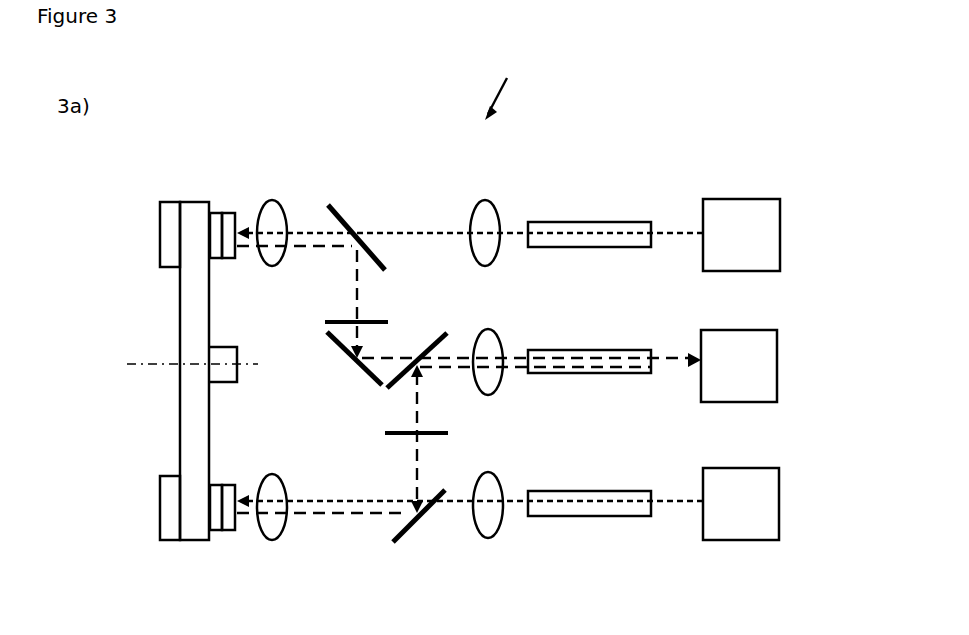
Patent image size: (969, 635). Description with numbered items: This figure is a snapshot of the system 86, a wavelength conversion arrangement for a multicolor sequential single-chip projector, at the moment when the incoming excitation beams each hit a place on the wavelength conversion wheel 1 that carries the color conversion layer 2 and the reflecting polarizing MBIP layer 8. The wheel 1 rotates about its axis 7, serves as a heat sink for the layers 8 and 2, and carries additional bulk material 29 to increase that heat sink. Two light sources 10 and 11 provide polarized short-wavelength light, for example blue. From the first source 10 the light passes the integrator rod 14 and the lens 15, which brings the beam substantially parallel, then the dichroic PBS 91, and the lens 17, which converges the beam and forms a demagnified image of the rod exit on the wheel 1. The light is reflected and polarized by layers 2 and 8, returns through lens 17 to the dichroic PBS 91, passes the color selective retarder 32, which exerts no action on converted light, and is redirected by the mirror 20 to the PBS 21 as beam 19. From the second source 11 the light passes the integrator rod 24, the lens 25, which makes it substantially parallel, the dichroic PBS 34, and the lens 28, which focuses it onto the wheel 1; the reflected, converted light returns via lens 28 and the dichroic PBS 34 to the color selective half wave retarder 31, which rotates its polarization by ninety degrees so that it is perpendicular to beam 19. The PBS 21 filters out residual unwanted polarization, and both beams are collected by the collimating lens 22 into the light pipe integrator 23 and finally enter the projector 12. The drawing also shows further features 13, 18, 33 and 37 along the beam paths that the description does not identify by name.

The wavelength conversion wheel 1 is at (190, 202).
The wavelength conversion layer 2 is at (215, 213).
The axis 7 is at (135, 358).
The reflecting polarizing layer 8 is at (235, 213).
The light source 10 is at (770, 199).
The light source 11 is at (771, 468).
The projector 12 is at (768, 330).
The light beam 13 is at (662, 232).
The integrator rod 14 is at (553, 222).
The lens 15 is at (485, 200).
The lens 17 is at (272, 200).
The reflected beam 18 is at (300, 249).
The light beam 19 is at (360, 308).
The mirror 20 is at (335, 342).
The PBS 21 is at (418, 343).
The lens 22 is at (485, 330).
The light pipe integrator 23 is at (547, 350).
The integrator rod 24 is at (548, 491).
The lens 25 is at (488, 472).
The lens 28 is at (268, 474).
The bulk material 29 is at (160, 230).
The color selective half wave retarder 31 is at (385, 440).
The color selective retarder 32 is at (327, 322).
The beam splitter 33 is at (452, 356).
The dichroic PBS 34 is at (402, 537).
The beam 37 is at (452, 367).
The system 86 is at (510, 69).
The dichroic PBS 91 is at (343, 220).